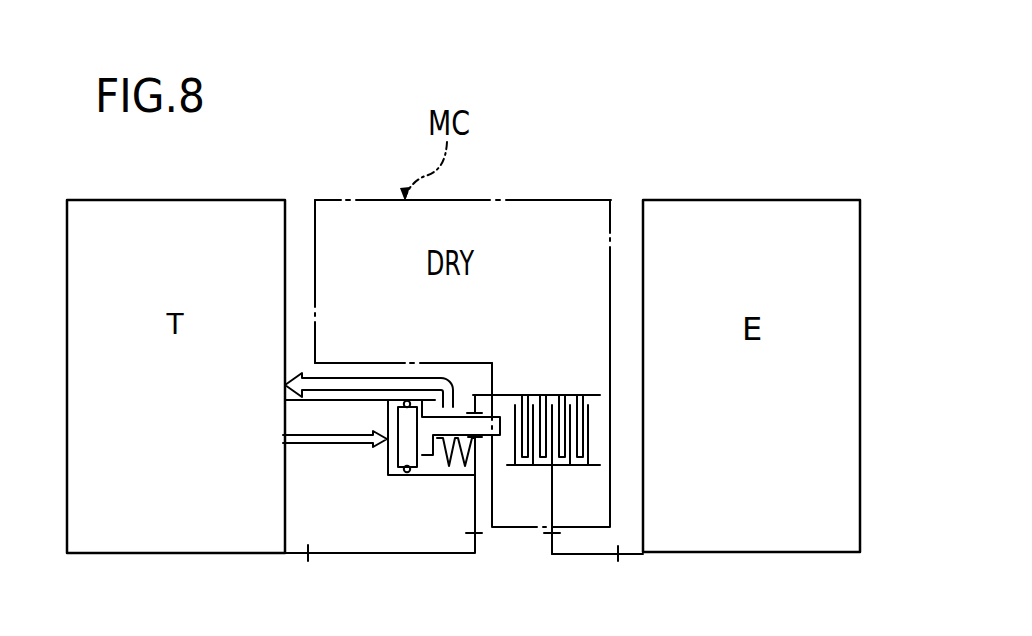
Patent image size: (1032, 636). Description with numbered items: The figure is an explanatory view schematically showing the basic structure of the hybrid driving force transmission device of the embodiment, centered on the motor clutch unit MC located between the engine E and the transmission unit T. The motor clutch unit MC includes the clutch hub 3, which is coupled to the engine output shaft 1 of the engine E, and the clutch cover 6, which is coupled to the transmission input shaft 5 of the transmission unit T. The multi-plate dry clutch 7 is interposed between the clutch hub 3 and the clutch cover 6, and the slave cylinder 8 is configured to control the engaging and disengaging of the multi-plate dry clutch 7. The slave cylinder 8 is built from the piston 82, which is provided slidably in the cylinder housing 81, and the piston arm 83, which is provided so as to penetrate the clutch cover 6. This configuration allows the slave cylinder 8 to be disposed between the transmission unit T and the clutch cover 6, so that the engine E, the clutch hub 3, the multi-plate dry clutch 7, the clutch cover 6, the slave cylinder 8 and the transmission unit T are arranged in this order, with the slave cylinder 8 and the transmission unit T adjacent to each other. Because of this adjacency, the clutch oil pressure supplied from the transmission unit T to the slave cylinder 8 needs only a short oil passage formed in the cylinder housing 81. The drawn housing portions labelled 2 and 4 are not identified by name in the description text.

The engine output shaft 1 is at (632, 557).
The clutch housing 2 is at (575, 557).
The clutch hub 3 is at (553, 497).
The transmission housing 4 is at (425, 556).
The transmission input shaft 5 is at (296, 557).
The clutch cover 6 is at (503, 395).
The multi-plate dry clutch 7 is at (596, 425).
The slave cylinder 8 is at (415, 437).
The cylinder housing 81 is at (432, 476).
The piston 82 is at (405, 450).
The piston arm 83 is at (461, 420).